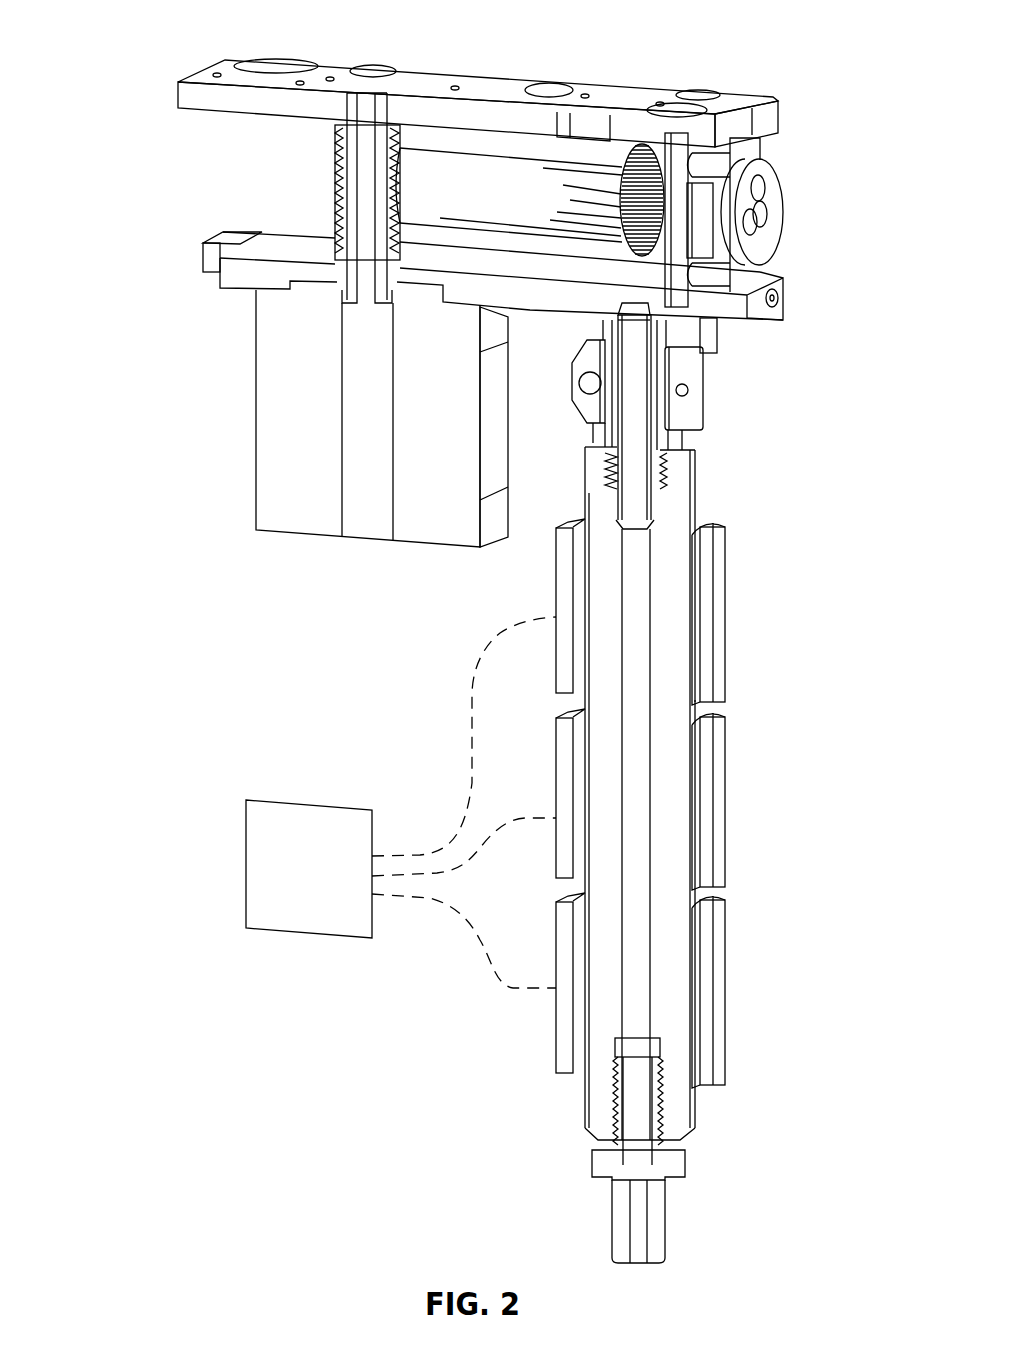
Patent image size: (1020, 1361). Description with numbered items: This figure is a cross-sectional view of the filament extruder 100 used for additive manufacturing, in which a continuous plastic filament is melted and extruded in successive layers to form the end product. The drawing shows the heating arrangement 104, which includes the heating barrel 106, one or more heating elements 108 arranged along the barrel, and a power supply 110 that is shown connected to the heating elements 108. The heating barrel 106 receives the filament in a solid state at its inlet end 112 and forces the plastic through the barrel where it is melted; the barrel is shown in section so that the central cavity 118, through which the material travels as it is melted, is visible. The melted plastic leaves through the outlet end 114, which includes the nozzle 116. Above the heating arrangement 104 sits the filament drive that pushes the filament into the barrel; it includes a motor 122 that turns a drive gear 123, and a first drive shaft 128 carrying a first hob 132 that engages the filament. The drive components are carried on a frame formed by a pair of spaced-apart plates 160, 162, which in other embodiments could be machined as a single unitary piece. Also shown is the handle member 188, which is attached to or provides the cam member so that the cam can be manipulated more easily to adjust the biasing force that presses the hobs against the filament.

The filament extruder 100 is at (122, 262).
The heating arrangement 104 is at (854, 1125).
The heating barrel 106 is at (686, 490).
The heating elements 108 is at (724, 617).
The power supply 110 is at (245, 837).
The inlet end 112 is at (730, 372).
The outlet end 114 is at (715, 1186).
The nozzle 116 is at (655, 1243).
The central cavity 118 is at (638, 530).
The motor 122 is at (278, 535).
The drive gear 123 is at (350, 198).
The first drive shaft 128 is at (508, 198).
The first hob 132 is at (603, 185).
The plate 160 is at (233, 272).
The plate 162 is at (255, 95).
The handle member 188 is at (785, 206).